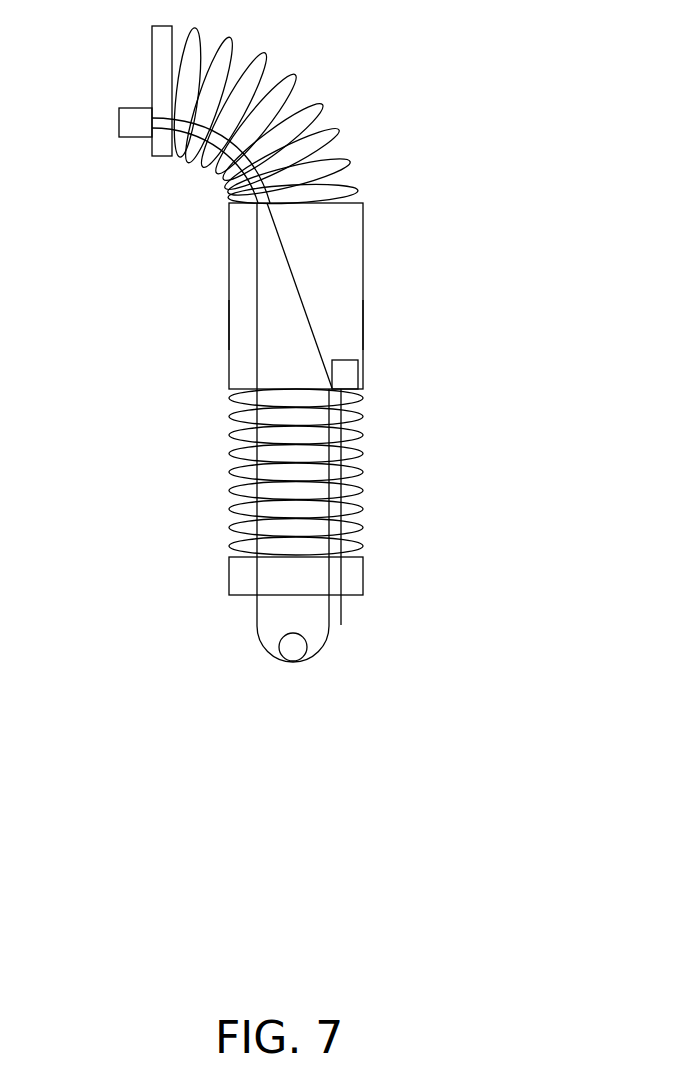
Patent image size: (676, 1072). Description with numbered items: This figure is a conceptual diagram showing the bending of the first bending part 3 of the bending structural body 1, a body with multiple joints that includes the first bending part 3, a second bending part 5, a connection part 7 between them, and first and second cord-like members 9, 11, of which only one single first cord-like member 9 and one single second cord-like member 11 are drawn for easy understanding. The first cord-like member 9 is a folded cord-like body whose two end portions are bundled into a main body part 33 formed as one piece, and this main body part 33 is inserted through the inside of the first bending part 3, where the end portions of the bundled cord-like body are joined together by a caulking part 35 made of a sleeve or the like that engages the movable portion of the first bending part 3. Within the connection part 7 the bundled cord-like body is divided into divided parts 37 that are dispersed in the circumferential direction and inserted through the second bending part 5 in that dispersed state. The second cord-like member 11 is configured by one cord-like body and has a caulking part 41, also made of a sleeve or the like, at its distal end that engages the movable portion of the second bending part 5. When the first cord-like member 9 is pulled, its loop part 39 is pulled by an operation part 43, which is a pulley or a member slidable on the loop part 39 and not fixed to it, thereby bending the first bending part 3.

The bending structural body 1 is at (440, 73).
The first bending part 3 is at (360, 157).
The second bending part 5 is at (363, 470).
The connection part 7 is at (363, 230).
The first cord-like member 9 is at (253, 257).
The second cord-like member 11 is at (341, 612).
The main body part 33 is at (203, 167).
The caulking part 35 is at (119, 125).
The divided parts 37 is at (229, 325).
The loop part 39 is at (268, 652).
The caulking part 41 is at (350, 371).
The operation part 43 is at (310, 650).